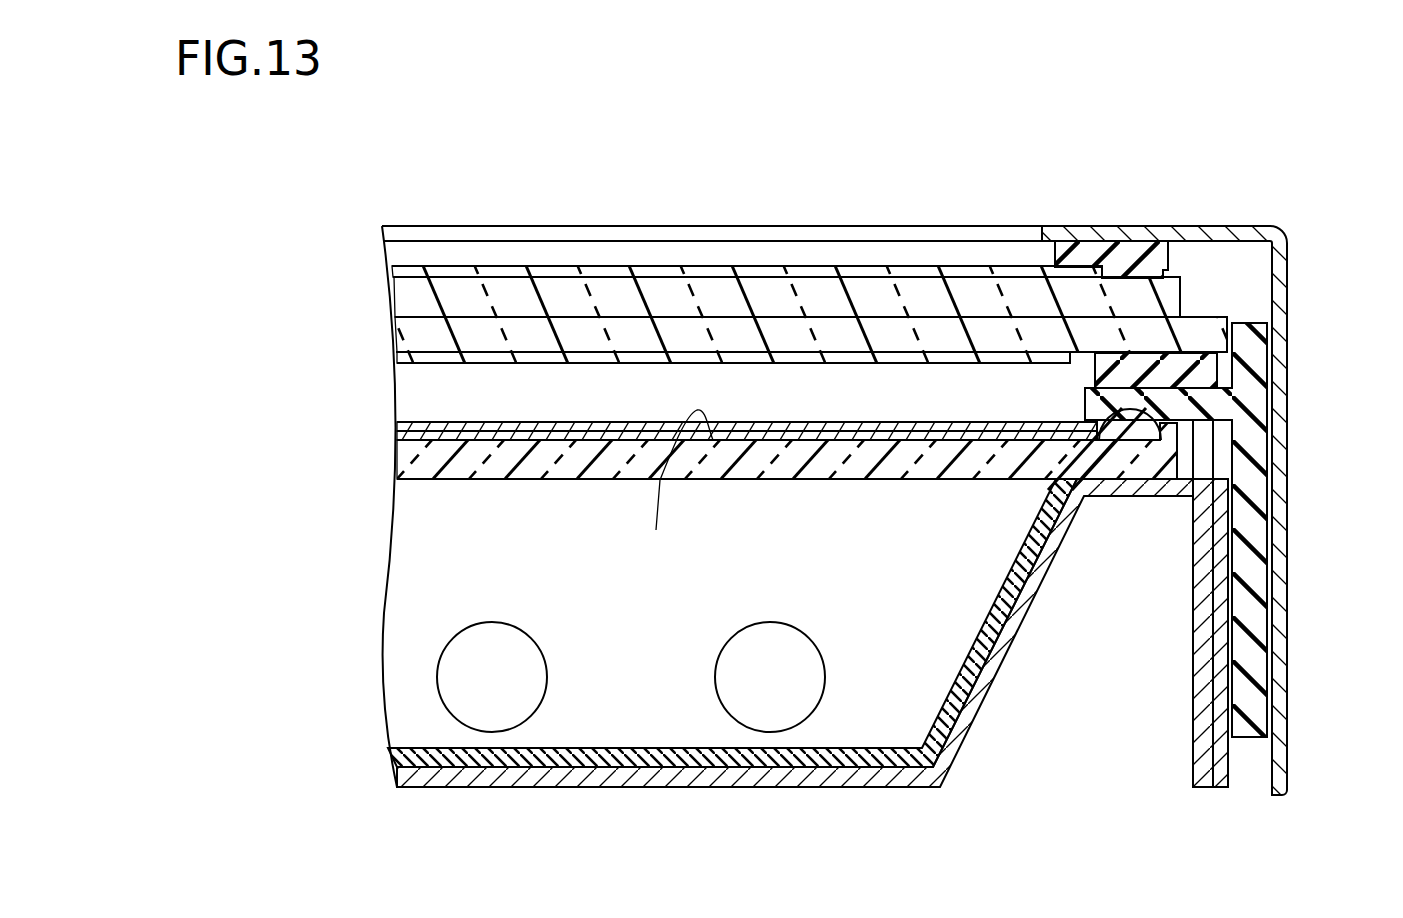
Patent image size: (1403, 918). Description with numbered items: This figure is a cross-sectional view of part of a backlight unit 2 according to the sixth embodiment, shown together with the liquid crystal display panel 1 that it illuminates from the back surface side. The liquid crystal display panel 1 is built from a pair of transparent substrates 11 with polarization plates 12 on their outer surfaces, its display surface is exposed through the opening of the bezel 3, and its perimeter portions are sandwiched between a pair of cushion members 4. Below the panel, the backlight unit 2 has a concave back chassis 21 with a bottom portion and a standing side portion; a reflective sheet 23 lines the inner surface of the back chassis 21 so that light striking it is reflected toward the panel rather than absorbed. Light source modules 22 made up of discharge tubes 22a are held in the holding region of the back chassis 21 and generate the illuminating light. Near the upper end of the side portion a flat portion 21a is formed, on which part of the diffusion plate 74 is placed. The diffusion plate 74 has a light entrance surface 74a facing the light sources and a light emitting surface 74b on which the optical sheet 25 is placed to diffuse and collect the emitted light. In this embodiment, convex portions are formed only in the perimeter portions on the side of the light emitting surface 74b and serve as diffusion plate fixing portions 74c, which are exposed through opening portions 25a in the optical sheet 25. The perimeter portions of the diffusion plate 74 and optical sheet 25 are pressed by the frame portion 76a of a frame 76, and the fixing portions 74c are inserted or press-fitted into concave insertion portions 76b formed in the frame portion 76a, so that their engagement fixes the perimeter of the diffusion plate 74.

The liquid crystal display panel 1 is at (738, 307).
The backlight unit 2 is at (816, 582).
The bezel 3 is at (1273, 234).
The cushion member 4 is at (1098, 252).
The transparent substrate 11 is at (407, 298).
The polarization plate 12 is at (407, 270).
The back chassis 21 is at (837, 637).
The flat portion 21a is at (1170, 482).
The light source module 22 is at (559, 640).
The discharge tube 22a is at (495, 645).
The reflective sheet 23 is at (402, 755).
The optical sheet 25 is at (727, 430).
The opening portion 25a is at (1097, 416).
The diffusion plate 74 is at (735, 463).
The light entrance surface 74a is at (576, 480).
The light emitting surface 74b is at (673, 484).
The diffusion plate fixing portion 74c is at (1095, 402).
The frame 76 is at (1215, 530).
The frame portion 76a is at (1180, 400).
The insertion portion 76b is at (1138, 410).